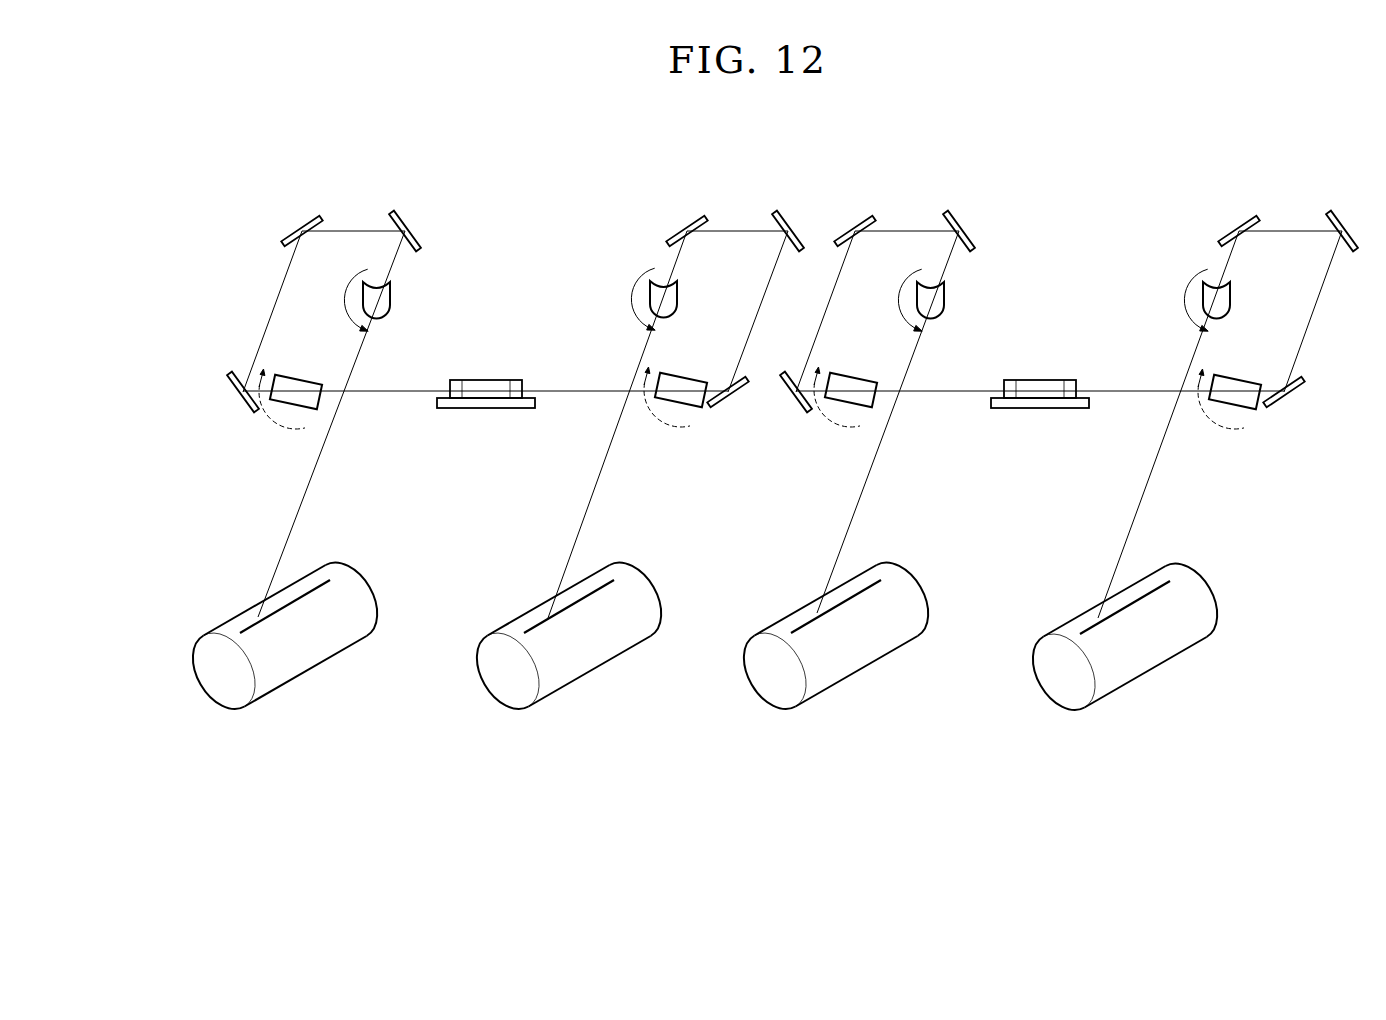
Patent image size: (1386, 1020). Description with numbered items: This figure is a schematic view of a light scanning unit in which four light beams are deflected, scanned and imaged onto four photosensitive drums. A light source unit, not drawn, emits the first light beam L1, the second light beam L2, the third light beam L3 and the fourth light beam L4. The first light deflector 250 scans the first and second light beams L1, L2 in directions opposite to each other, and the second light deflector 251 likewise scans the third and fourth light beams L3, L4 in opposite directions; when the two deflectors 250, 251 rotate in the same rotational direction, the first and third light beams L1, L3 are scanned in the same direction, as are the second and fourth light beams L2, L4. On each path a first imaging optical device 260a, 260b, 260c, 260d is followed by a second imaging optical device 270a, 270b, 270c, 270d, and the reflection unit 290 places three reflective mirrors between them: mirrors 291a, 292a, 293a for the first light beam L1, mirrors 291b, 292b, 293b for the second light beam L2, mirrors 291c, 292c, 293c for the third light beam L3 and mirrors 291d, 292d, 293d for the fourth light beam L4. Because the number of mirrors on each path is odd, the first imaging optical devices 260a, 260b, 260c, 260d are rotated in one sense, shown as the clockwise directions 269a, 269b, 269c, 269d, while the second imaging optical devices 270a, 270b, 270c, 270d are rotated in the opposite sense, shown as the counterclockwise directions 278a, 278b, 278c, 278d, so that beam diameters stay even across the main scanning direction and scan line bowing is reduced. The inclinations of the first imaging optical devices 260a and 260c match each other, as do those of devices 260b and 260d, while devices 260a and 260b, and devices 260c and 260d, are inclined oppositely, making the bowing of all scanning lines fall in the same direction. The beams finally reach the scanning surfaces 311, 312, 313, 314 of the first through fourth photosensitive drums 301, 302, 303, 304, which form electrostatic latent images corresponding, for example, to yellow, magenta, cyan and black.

The reflection unit 290 is at (220, 426).
The first light deflector 250 is at (470, 410).
The second light deflector 251 is at (1025, 410).
The first imaging optical device 260a is at (302, 376).
The first imaging optical device 260b is at (687, 373).
The first imaging optical device 260c is at (855, 375).
The first imaging optical device 260d is at (1240, 373).
The clockwise direction 269a is at (297, 428).
The clockwise direction 269b is at (648, 413).
The clockwise direction 269c is at (850, 429).
The clockwise direction 269d is at (1205, 413).
The second imaging optical device 270a is at (391, 302).
The second imaging optical device 270b is at (678, 293).
The second imaging optical device 270c is at (944, 309).
The second imaging optical device 270d is at (1231, 297).
The counterclockwise direction 278a is at (353, 290).
The counterclockwise direction 278b is at (638, 290).
The counterclockwise direction 278c is at (903, 292).
The counterclockwise direction 278d is at (1190, 290).
The reflective mirror 291a is at (242, 404).
The reflective mirror 291b is at (718, 408).
The reflective mirror 291c is at (794, 399).
The reflective mirror 291d is at (1271, 408).
The reflective mirror 292a is at (297, 225).
The reflective mirror 292b is at (790, 215).
The reflective mirror 292c is at (852, 223).
The reflective mirror 292d is at (1342, 218).
The reflective mirror 293a is at (407, 224).
The reflective mirror 293b is at (683, 226).
The reflective mirror 293c is at (966, 222).
The reflective mirror 293d is at (1237, 226).
The first photosensitive drum 301 is at (221, 708).
The second photosensitive drum 302 is at (497, 702).
The third photosensitive drum 303 is at (765, 703).
The fourth photosensitive drum 304 is at (1050, 702).
The laser emission slit 311 is at (256, 618).
The laser emission slit 312 is at (546, 618).
The laser emission slit 313 is at (808, 618).
The laser emission slit 314 is at (1096, 619).
The first light beam L1 is at (299, 506).
The second light beam L2 is at (590, 503).
The third light beam L3 is at (853, 505).
The fourth light beam L4 is at (1153, 477).